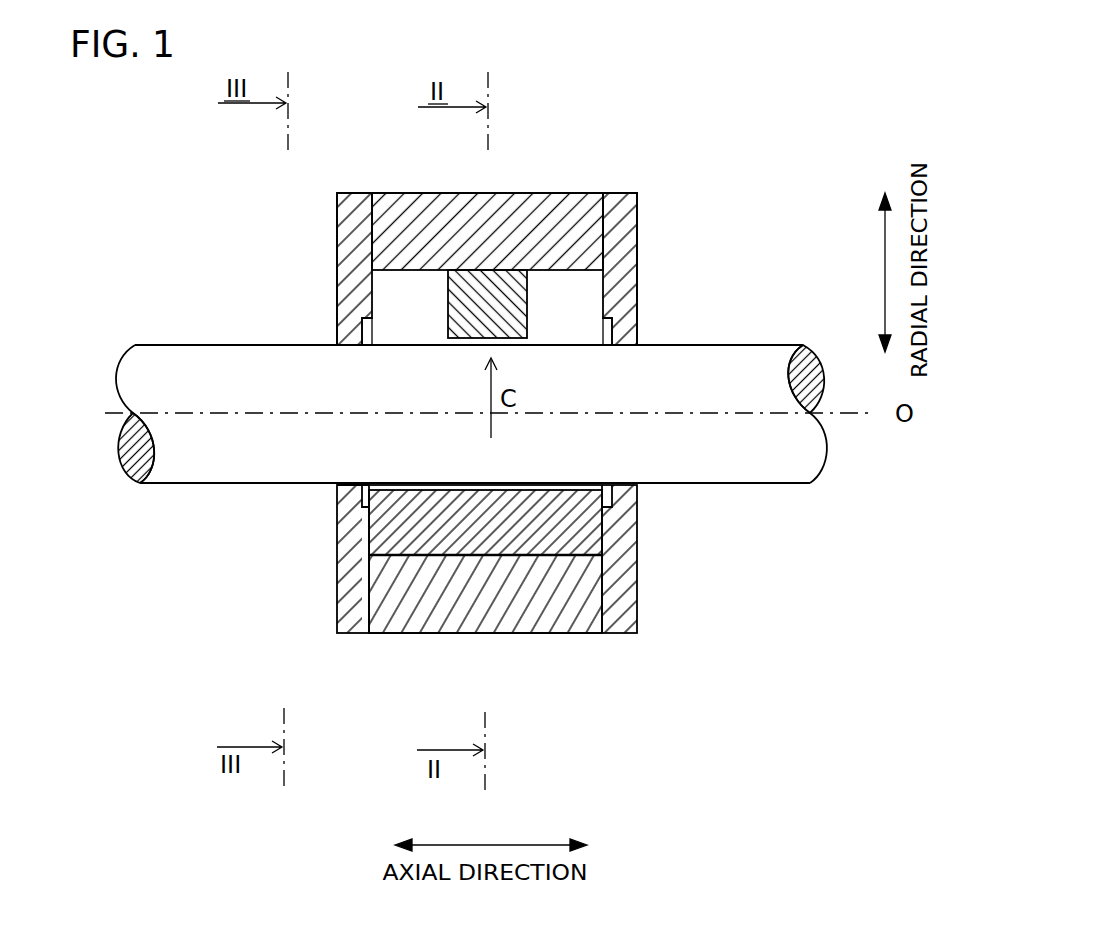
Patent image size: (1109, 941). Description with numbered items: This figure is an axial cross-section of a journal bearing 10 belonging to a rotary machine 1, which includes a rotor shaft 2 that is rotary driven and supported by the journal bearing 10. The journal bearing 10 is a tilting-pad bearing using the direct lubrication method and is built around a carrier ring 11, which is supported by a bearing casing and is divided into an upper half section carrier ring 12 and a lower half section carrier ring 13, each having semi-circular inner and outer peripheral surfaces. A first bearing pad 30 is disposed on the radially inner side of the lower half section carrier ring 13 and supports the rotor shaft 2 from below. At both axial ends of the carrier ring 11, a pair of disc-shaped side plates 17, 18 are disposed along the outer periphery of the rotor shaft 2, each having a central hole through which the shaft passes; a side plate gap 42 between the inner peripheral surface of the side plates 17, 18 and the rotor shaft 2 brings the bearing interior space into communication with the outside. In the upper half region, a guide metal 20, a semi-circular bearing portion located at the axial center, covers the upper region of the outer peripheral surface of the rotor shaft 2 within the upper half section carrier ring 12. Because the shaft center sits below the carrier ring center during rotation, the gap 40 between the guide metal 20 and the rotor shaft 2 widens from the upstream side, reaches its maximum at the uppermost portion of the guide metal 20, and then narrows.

The rotary machine 1 is at (724, 67).
The rotor shaft 2 is at (773, 357).
The journal bearing 10 is at (695, 219).
The carrier ring 11 is at (560, 212).
The upper half section carrier ring 12 is at (382, 232).
The lower half section carrier ring 13 is at (490, 615).
The side plate 17 is at (343, 280).
The side plate 18 is at (633, 280).
The guide metal 20 is at (463, 288).
The first bearing pad 30 is at (580, 525).
The gap 40 is at (452, 343).
The side plate gap 42 is at (640, 325).